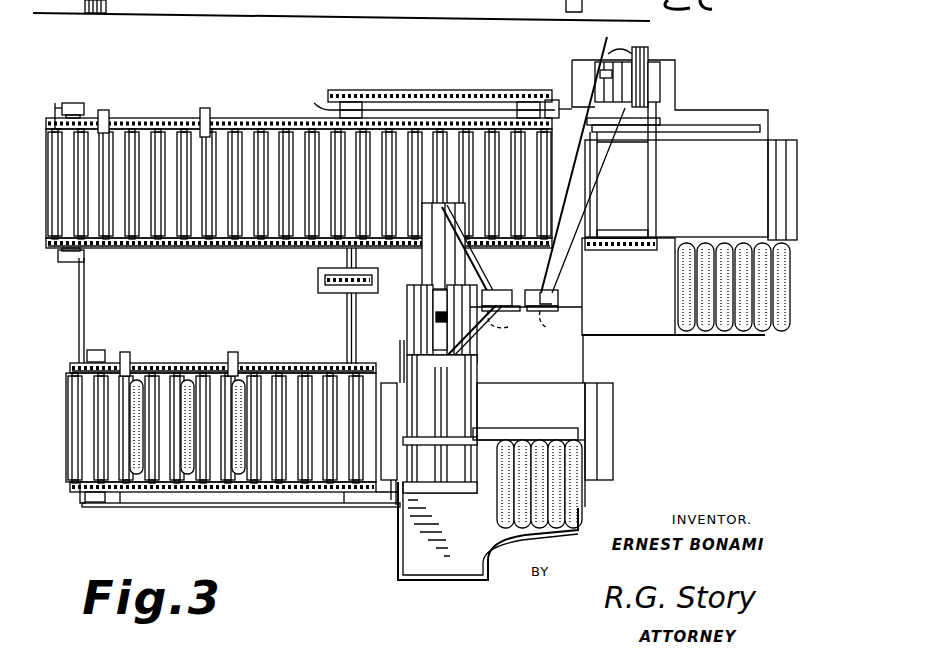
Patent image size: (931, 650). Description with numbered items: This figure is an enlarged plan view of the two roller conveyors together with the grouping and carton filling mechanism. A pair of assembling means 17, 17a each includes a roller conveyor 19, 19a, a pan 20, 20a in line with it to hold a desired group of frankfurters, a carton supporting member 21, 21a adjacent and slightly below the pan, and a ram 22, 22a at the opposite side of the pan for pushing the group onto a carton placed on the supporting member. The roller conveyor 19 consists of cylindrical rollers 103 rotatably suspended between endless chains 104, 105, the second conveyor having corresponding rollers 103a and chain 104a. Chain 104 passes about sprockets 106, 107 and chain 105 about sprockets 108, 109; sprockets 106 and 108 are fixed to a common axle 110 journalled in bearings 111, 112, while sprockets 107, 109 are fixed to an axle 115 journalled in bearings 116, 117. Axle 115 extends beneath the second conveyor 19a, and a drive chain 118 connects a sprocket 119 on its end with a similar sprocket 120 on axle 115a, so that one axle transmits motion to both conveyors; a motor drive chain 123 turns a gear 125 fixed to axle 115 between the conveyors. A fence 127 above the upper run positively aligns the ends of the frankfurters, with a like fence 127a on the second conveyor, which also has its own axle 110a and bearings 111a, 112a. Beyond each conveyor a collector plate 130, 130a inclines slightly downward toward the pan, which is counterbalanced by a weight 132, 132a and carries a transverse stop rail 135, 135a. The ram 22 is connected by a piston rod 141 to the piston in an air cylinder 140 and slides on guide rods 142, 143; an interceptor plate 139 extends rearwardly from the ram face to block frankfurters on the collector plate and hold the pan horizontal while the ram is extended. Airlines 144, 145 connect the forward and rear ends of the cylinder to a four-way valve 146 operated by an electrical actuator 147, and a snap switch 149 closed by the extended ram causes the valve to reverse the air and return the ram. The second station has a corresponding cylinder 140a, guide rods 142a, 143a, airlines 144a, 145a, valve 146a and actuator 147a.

The assembling means 17 is at (242, 492).
The assembling means 17a is at (273, 118).
The roller conveyor 19 is at (215, 364).
The roller conveyor 19a is at (209, 248).
The pan 20 is at (531, 387).
The pan 20a is at (670, 148).
The carton supporting member 21 is at (414, 580).
The carton supporting member 21a is at (672, 337).
The ram 22 is at (487, 447).
The ram 22a is at (700, 124).
The cylindrical rollers 103 is at (132, 420).
The article 103a is at (298, 249).
The endless chain 104 is at (150, 507).
The lower frame bar 104a is at (165, 250).
The endless chain 105 is at (164, 363).
The sprocket 106 is at (120, 503).
The sprocket 107 is at (338, 494).
The sprocket 108 is at (80, 362).
The sprocket 109 is at (340, 364).
The common axle 110 is at (82, 500).
The end bracket 110a is at (86, 110).
The bearing 111 is at (93, 503).
The clip 111a is at (72, 263).
The bearing 112 is at (100, 350).
The block 112a is at (76, 103).
The axle 115 is at (358, 300).
The axle 115a is at (559, 110).
The bearing 116 is at (376, 498).
The bearing 117 is at (420, 96).
The drive chain 118 is at (415, 90).
The sprocket 119 is at (352, 102).
The sprocket 120 is at (530, 102).
The drive chain 123 is at (320, 284).
The gear 125 is at (336, 292).
The fence 127 is at (236, 352).
The pin 127a is at (207, 108).
The collector plate 130 is at (388, 482).
The frame 130a is at (592, 262).
The weight 132 is at (614, 420).
The guide block 132a is at (780, 140).
The stop rail 135 is at (614, 400).
The guide 135a is at (768, 188).
The interceptor plate 139 is at (400, 356).
The air cylinder 140 is at (430, 260).
The motor 140a is at (650, 50).
The piston rod 141 is at (470, 376).
The guide rod 142 is at (420, 445).
The crossbar 142a is at (598, 214).
The guide rod 143 is at (477, 393).
The leg 143a is at (658, 216).
The airline 144 is at (466, 336).
The link 144a is at (610, 158).
The airline 145 is at (445, 268).
The crank arm 145a is at (606, 40).
The four-way valve 146 is at (496, 290).
The slide 146a is at (560, 302).
The electrical actuator 147 is at (512, 322).
The cam path 147a is at (562, 330).
The snap switch 149 is at (393, 503).